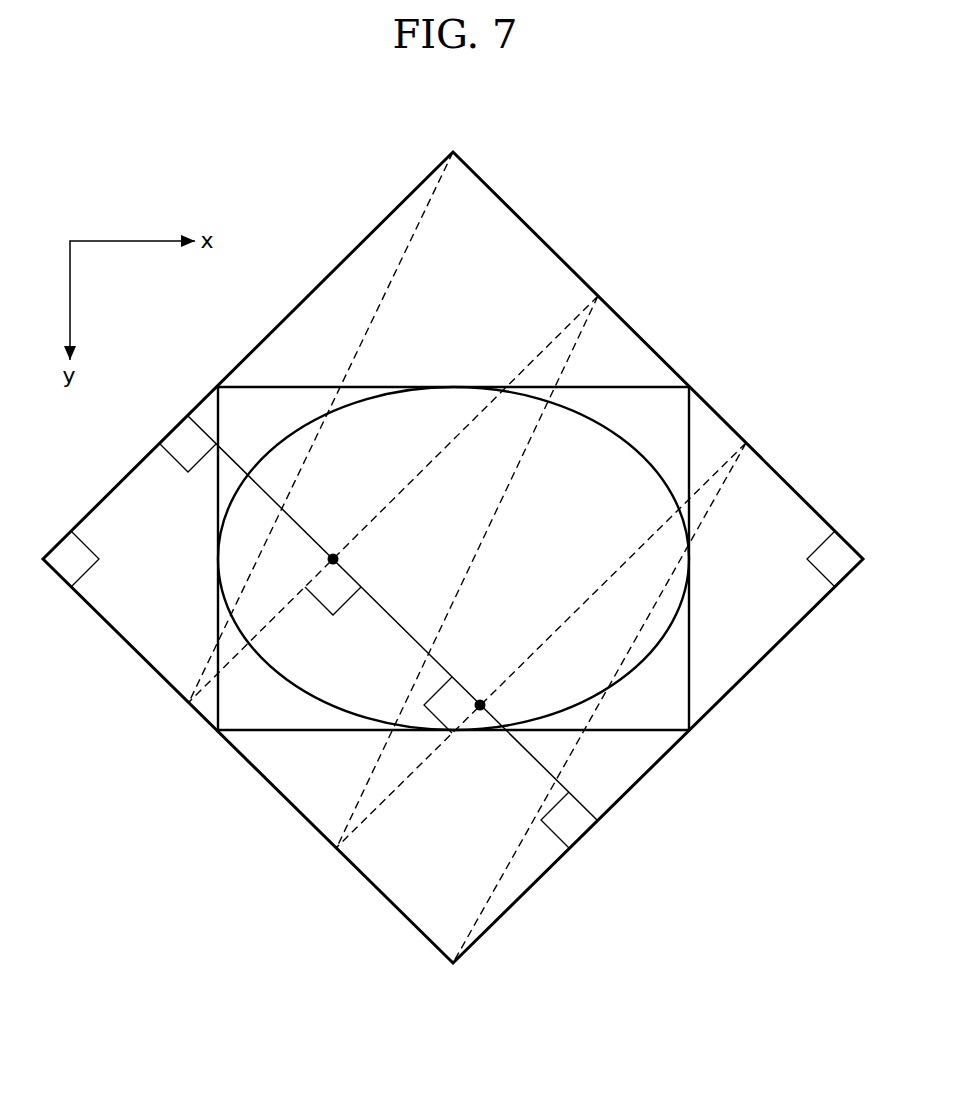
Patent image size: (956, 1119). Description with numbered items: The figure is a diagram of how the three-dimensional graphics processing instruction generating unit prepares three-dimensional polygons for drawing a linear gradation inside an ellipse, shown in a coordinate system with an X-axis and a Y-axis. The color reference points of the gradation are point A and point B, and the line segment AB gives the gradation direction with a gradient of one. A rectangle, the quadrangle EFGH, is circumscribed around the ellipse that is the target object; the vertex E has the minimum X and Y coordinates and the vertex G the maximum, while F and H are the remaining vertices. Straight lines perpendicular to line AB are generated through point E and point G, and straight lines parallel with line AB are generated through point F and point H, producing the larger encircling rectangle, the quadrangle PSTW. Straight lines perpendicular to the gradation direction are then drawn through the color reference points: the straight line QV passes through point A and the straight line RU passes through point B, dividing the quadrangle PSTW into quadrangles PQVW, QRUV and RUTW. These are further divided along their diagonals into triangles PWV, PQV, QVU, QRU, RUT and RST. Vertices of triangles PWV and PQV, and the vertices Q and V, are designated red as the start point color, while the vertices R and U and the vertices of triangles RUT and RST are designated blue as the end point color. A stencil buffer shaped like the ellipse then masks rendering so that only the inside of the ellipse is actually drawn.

The vertex P is at (324, 413).
The point Q is at (404, 559).
The point R is at (551, 691).
The vertex S is at (845, 559).
The vertex T is at (452, 979).
The point U is at (326, 859).
The point V is at (178, 715).
The vertex W is at (58, 559).
The point E is at (188, 431).
The point F is at (698, 374).
The point G is at (701, 742).
The point H is at (208, 742).
The point A is at (333, 568).
The point B is at (467, 705).